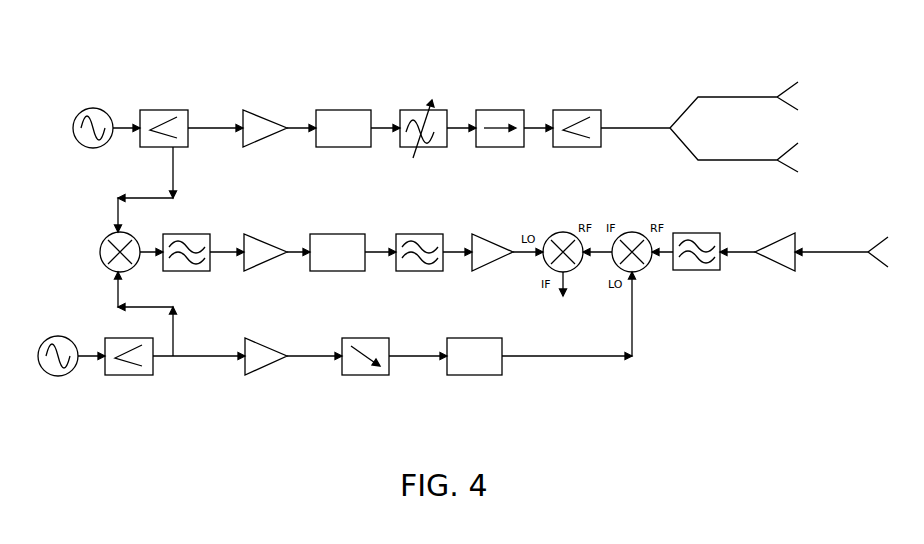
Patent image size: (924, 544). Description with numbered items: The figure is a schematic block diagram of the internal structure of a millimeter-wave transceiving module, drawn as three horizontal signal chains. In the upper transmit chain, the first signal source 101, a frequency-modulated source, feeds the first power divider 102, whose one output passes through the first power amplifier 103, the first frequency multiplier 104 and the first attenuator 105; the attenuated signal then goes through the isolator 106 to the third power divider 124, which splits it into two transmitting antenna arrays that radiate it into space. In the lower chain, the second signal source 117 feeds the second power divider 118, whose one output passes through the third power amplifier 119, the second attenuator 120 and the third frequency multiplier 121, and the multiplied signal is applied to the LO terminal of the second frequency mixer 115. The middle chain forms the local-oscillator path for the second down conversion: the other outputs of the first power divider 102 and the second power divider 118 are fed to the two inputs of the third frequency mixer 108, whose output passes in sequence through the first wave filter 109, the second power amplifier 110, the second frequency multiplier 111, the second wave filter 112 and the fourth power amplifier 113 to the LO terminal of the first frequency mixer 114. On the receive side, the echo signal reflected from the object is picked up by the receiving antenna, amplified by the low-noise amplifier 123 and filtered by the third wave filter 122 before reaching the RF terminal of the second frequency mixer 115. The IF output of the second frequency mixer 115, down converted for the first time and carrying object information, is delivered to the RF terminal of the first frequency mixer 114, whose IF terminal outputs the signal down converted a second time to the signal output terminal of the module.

The first signal source 101 is at (88, 108).
The first power divider 102 is at (165, 108).
The first power amplifier 103 is at (263, 108).
The first frequency multiplier 104 is at (343, 108).
The first attenuator 105 is at (418, 108).
The isolator 106 is at (497, 108).
The third power divider 124 is at (578, 108).
The third frequency mixer 108 is at (101, 248).
The first wave filter 109 is at (184, 234).
The second power amplifier 110 is at (262, 234).
The second frequency multiplier 111 is at (343, 232).
The second wave filter 112 is at (423, 232).
The fourth power amplifier 113 is at (490, 233).
The first frequency mixer 114 is at (575, 230).
The second frequency mixer 115 is at (637, 226).
The third wave filter 122 is at (690, 272).
The low-noise amplifier 123 is at (778, 264).
The second signal source 117 is at (63, 332).
The second power divider 118 is at (127, 378).
The third power amplifier 119 is at (263, 378).
The second attenuator 120 is at (363, 378).
The third frequency multiplier 121 is at (465, 378).